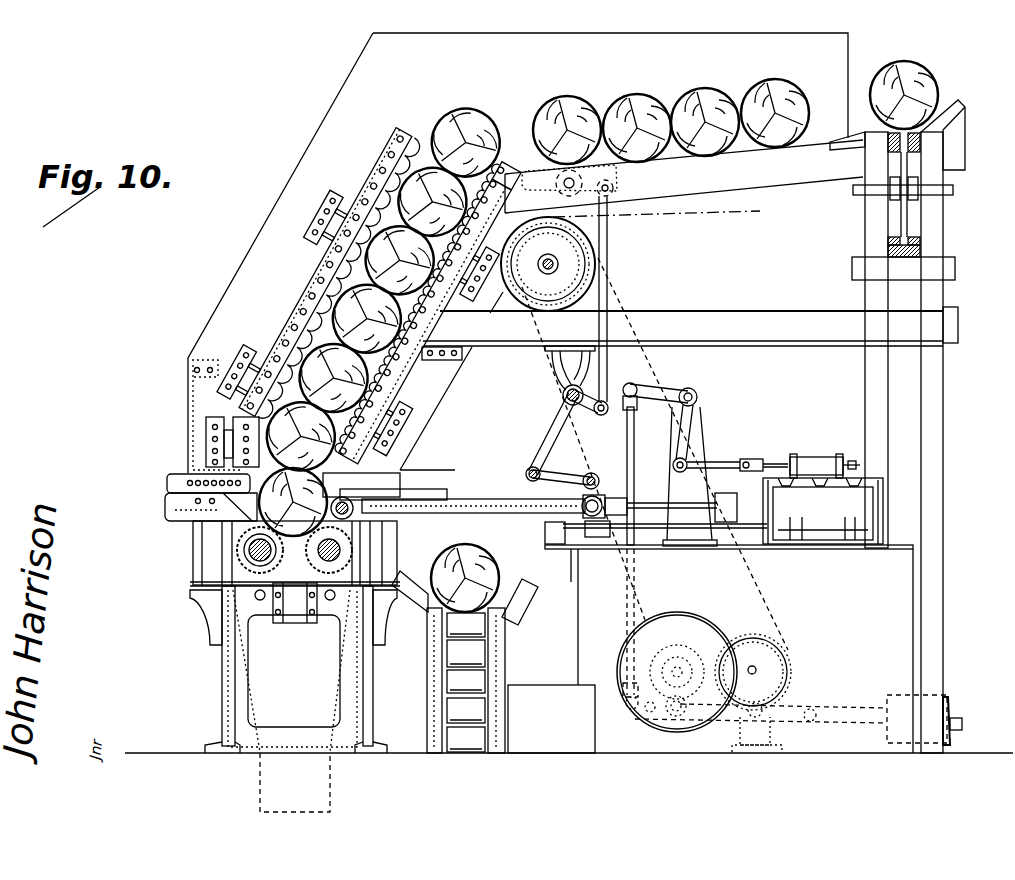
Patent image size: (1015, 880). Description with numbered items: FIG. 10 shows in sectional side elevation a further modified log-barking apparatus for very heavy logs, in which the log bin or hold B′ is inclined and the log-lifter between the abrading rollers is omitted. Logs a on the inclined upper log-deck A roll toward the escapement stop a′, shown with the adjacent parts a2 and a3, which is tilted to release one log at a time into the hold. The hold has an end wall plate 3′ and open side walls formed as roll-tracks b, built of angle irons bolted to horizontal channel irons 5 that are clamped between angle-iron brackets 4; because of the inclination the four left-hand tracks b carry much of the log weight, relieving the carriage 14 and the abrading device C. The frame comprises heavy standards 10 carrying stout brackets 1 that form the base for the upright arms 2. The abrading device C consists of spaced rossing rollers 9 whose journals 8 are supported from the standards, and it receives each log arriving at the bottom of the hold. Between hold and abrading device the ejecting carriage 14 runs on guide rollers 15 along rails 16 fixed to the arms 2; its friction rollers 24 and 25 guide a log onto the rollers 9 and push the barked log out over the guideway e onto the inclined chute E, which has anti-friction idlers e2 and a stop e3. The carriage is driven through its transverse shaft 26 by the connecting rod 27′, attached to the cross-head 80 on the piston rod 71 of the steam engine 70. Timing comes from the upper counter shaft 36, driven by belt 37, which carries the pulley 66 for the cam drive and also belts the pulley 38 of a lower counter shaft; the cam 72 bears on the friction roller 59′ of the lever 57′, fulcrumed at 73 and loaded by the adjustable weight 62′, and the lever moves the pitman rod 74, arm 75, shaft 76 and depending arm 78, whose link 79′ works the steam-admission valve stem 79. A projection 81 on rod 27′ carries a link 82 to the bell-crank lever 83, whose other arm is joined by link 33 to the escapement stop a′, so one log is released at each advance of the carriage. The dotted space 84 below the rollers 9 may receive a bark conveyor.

The frame 3′ is at (518, 253).
The tracks b is at (368, 187).
The inclined feed section B′ is at (293, 272).
The logs a is at (590, 106).
The transfer plate a3 is at (532, 173).
The feed roller a2 is at (558, 186).
The escapement stop a′ is at (616, 184).
The upper log-deck A is at (684, 176).
The belt 37 is at (728, 215).
The second pulley 66 is at (590, 267).
The upper counter shaft 36 is at (549, 274).
The link 33 is at (608, 286).
The angle iron brackets 4 is at (240, 357).
The channel irons 5 is at (397, 403).
The guide rollers 15 is at (167, 487).
The carriage 14 is at (170, 516).
The friction rollers 24 is at (361, 485).
The rails 16 is at (420, 496).
The connecting rod 27′ is at (498, 497).
The transverse shaft 26 is at (345, 521).
The friction rollers 25 is at (254, 550).
The abrading rollers 9 is at (245, 551).
The journals 8 is at (257, 553).
The upright arms 2 is at (353, 553).
The barking or rossing device C is at (295, 572).
The guideway e is at (410, 592).
The ward or stop e3 is at (520, 602).
The delivery chute E is at (455, 648).
The anti-friction rollers e2 is at (466, 682).
The brackets 1 is at (205, 612).
The standards 10 is at (366, 706).
The space 84 is at (294, 671).
The bell-crank lever 83 is at (555, 429).
The link 82 is at (573, 474).
The projection 81 is at (592, 468).
The cross-head 80 is at (597, 492).
The piston-rod 71 is at (650, 498).
The pitman rod 74 is at (634, 456).
The arm 75 is at (663, 385).
The small horizontal shaft 76 is at (697, 396).
The depending arm 78 is at (692, 418).
The link 79′ is at (717, 457).
The steam-admission valve stem 79 is at (770, 463).
The steam engine 70 is at (823, 511).
The cam 72 is at (687, 647).
The fulcrum 73 is at (755, 704).
The pulley 38 is at (795, 668).
The lever arm 57′ is at (800, 707).
The friction roller 59′ is at (672, 713).
The adjustable weight 62′ is at (950, 705).